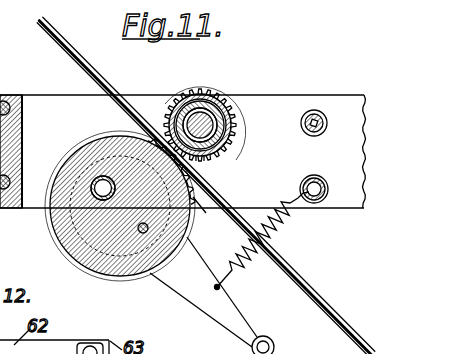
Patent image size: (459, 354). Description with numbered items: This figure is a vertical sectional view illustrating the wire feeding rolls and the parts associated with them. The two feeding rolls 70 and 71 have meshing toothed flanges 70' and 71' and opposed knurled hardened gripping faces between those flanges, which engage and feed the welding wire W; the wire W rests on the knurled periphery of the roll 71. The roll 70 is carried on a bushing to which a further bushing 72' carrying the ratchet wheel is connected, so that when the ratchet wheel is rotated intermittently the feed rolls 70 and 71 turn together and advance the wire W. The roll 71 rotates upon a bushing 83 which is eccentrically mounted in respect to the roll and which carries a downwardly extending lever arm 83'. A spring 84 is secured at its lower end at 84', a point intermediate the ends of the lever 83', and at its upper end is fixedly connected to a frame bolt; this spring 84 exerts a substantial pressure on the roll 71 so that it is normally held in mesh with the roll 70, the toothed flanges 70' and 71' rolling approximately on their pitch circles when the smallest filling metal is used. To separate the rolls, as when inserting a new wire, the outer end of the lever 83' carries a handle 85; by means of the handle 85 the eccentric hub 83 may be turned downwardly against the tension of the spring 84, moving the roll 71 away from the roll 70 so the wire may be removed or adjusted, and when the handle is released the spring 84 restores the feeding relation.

The welding wire W is at (101, 73).
The feeding roll 70 is at (200, 110).
The toothed flange 70' is at (226, 169).
The bushing 72' is at (224, 131).
The feeding roll 71 is at (133, 154).
The toothed flange 71' is at (212, 215).
The bushing 83 is at (105, 206).
The lever arm 83' is at (203, 292).
The spring 84 is at (266, 239).
The spring attachment point 84' is at (241, 288).
The handle 85 is at (272, 344).